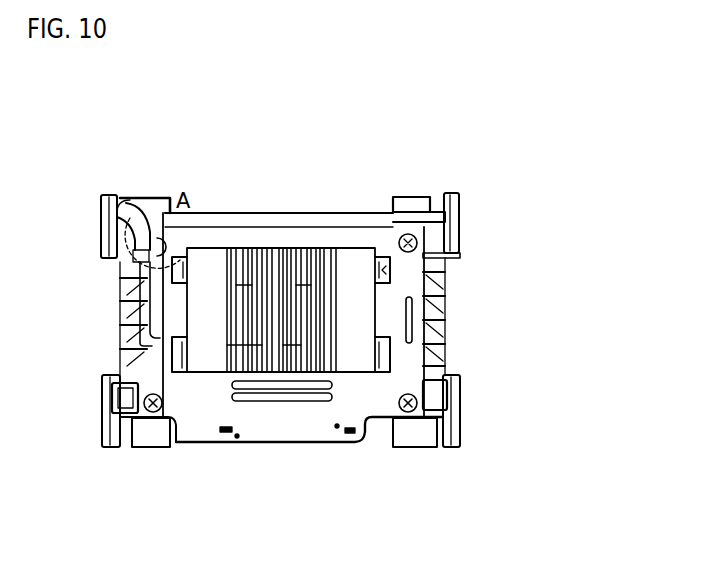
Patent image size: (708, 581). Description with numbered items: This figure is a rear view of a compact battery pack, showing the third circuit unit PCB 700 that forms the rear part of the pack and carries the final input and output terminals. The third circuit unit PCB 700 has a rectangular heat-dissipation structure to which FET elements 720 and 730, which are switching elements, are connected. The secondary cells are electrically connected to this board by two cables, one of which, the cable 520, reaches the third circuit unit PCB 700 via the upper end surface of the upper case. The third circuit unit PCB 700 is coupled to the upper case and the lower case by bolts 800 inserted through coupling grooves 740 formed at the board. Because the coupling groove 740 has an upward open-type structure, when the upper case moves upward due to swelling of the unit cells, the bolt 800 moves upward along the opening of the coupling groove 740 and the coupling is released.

The cable 520 is at (126, 200).
The third circuit unit PCB 700 is at (290, 425).
The FET element 720 is at (382, 243).
The FET element 730 is at (175, 357).
The coupling groove 740 is at (453, 266).
The bolt 800 is at (444, 226).